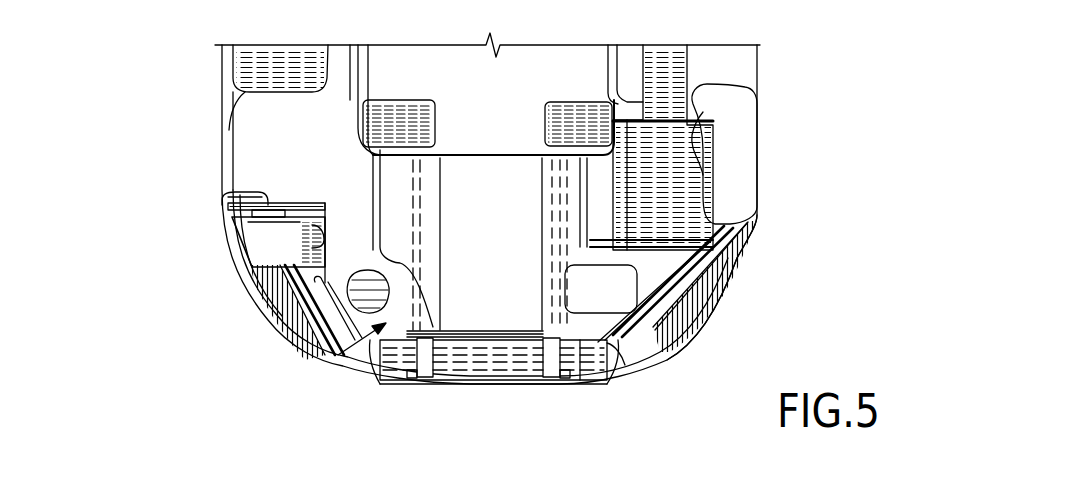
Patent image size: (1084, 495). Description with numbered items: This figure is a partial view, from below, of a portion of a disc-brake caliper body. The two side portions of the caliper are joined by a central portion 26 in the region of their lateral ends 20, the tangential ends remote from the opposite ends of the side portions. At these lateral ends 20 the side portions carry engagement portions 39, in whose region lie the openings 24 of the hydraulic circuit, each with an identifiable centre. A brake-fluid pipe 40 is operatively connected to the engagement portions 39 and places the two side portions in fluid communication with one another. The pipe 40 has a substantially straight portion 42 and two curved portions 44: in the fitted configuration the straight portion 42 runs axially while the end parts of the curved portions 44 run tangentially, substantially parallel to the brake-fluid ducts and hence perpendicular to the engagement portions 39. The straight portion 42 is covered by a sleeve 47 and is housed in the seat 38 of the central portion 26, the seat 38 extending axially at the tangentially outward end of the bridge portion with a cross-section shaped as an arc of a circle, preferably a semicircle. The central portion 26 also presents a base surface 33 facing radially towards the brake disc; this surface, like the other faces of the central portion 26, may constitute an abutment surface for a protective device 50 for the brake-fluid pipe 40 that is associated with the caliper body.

The lateral end 20 is at (260, 180).
The opening of the hydraulic circuit 24 is at (247, 215).
The central portion 26 is at (323, 357).
The base surface 33 is at (302, 245).
The seat 38 is at (513, 380).
The engagement portion 39 is at (253, 203).
The brake-fluid pipe 40 is at (593, 358).
The straight portion 42 is at (390, 357).
The curved portion 44 is at (308, 322).
The sleeve 47 is at (487, 353).
The protective device 50 is at (717, 303).